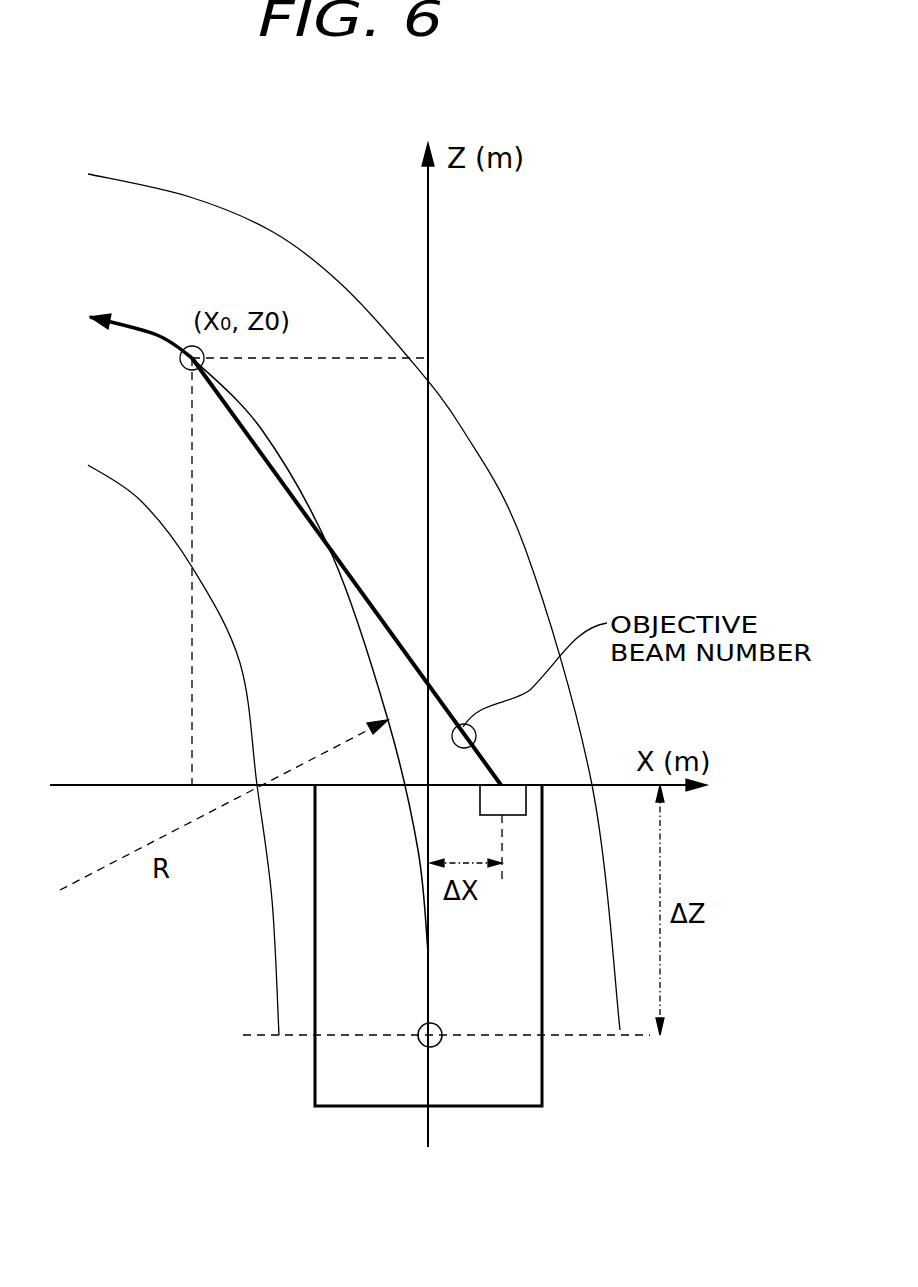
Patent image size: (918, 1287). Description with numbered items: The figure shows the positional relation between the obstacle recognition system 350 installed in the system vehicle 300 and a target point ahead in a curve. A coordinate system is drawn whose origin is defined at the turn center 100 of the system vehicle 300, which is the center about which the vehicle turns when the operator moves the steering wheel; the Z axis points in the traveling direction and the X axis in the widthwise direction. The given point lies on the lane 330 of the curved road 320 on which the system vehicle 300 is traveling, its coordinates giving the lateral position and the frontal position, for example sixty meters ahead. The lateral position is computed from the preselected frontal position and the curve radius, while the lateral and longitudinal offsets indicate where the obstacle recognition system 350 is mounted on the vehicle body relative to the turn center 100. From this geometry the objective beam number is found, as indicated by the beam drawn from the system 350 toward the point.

The turn center 100 is at (423, 1047).
The system vehicle 300 is at (315, 1108).
The curved road 320 is at (525, 548).
The lane 330 is at (128, 328).
The obstacle recognition system 350 is at (502, 785).